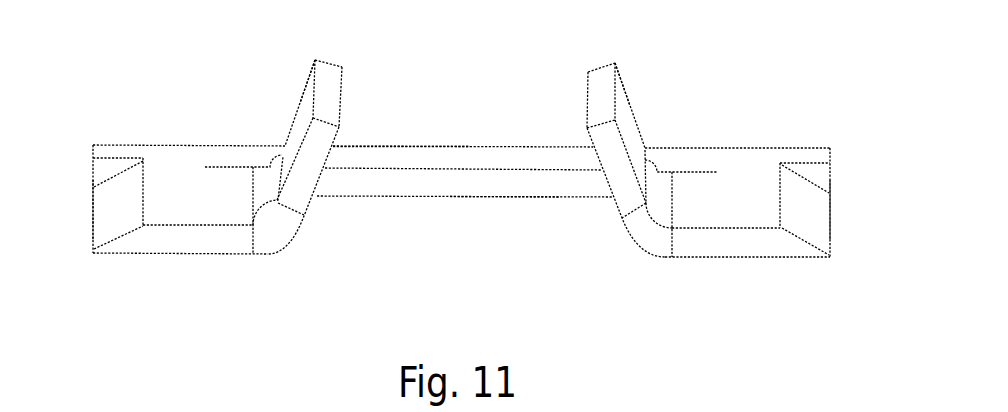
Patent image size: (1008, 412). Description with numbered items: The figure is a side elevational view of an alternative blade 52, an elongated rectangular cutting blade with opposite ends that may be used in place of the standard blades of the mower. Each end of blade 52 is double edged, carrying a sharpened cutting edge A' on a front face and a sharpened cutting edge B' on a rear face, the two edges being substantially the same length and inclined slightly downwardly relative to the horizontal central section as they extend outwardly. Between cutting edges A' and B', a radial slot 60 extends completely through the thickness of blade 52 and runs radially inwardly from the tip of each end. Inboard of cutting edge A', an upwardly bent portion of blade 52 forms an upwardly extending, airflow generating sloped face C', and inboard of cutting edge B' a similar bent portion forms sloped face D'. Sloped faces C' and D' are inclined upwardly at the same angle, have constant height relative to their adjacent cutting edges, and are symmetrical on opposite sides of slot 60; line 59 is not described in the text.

The blade 52 is at (459, 74).
The upper edge line of coupling member 59 is at (468, 145).
The slot 60 is at (507, 226).
The cutting edge A' is at (75, 215).
The cutting edge B' is at (845, 210).
The sloped face C' is at (278, 85).
The sloped face D' is at (652, 77).